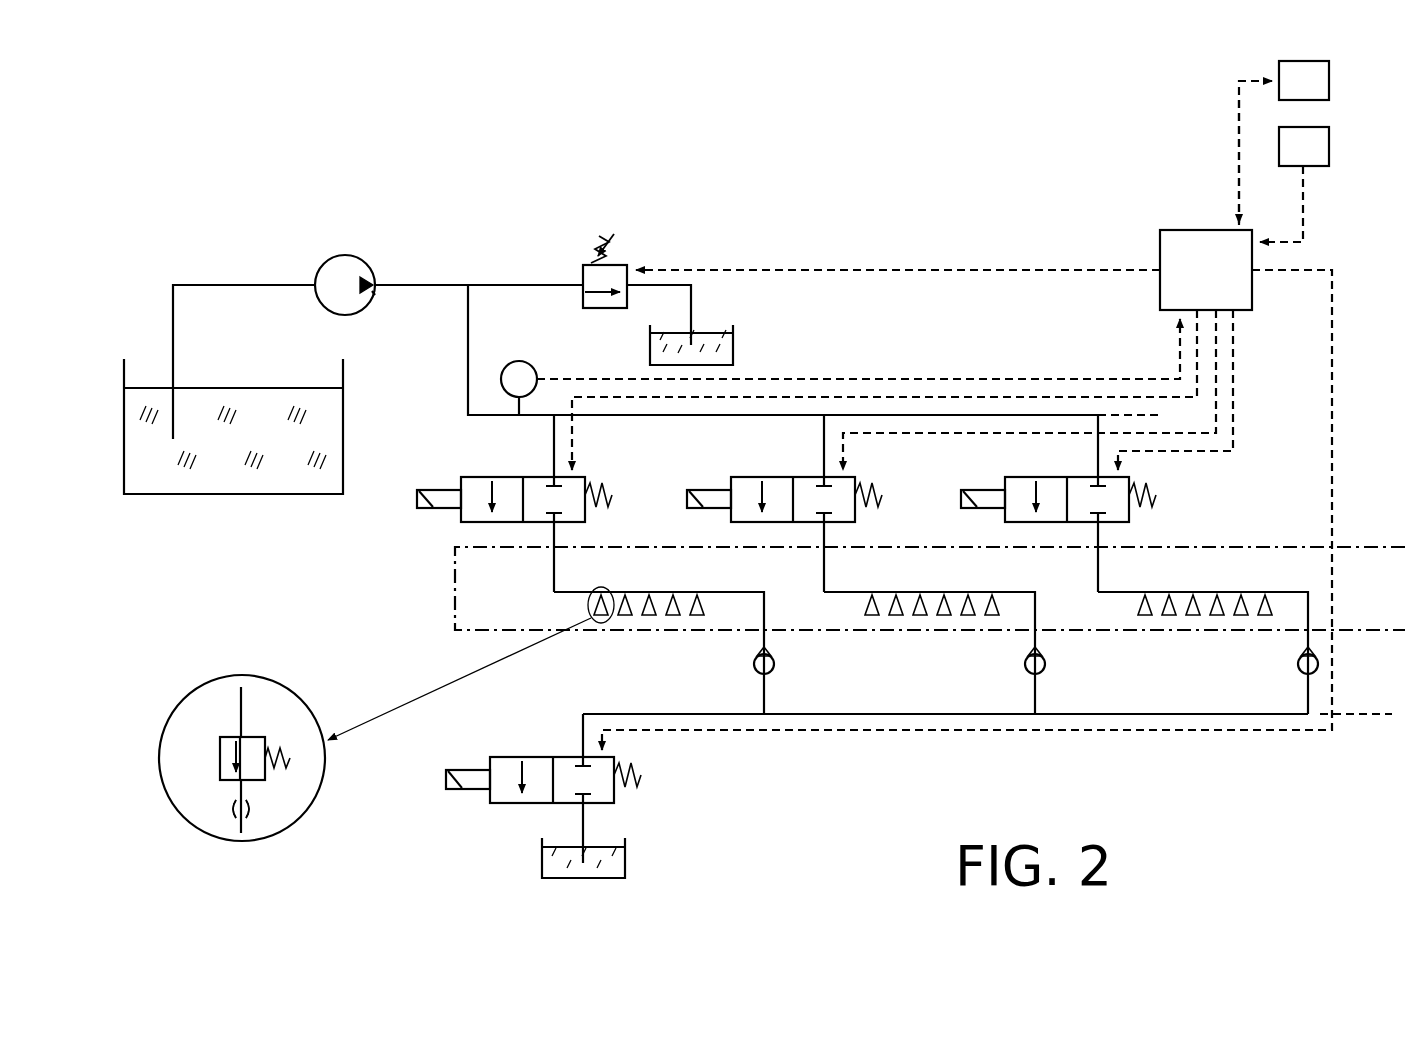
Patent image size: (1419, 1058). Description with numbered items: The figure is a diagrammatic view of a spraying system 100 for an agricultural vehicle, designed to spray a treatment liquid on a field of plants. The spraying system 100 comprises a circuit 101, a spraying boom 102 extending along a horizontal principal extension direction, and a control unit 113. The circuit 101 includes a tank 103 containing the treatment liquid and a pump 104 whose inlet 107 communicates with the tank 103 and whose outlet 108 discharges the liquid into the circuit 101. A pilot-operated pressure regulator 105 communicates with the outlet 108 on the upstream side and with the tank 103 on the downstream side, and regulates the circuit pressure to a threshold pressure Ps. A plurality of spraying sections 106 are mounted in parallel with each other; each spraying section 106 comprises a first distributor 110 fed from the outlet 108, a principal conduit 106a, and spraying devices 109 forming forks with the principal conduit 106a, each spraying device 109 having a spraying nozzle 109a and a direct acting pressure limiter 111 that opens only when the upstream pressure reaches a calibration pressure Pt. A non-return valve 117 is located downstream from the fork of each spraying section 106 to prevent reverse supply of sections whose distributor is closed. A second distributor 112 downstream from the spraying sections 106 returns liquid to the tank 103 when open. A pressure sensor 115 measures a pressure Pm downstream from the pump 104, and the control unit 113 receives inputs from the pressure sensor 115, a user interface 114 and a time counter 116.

The spraying system 100 is at (255, 183).
The circuit 101 is at (443, 285).
The spraying boom 102 is at (450, 580).
The tank 103 is at (343, 428).
The pump 104 is at (345, 256).
The pilot-operated pressure regulator 105 is at (582, 262).
The spraying section 106 is at (548, 436).
The principal conduit 106a is at (572, 592).
The inlet 107 is at (315, 285).
The outlet 108 is at (372, 293).
The spraying device 109 is at (710, 606).
The spraying nozzle 109a is at (252, 812).
The first distributor 110 is at (415, 499).
The direct acting pressure limiter 111 is at (250, 737).
The second distributor 112 is at (446, 779).
The control unit 113 is at (982, 490).
The user interface 114 is at (1329, 77).
The pressure sensor 115 is at (516, 362).
The time counter 116 is at (1329, 145).
The non-return valve 117 is at (775, 662).